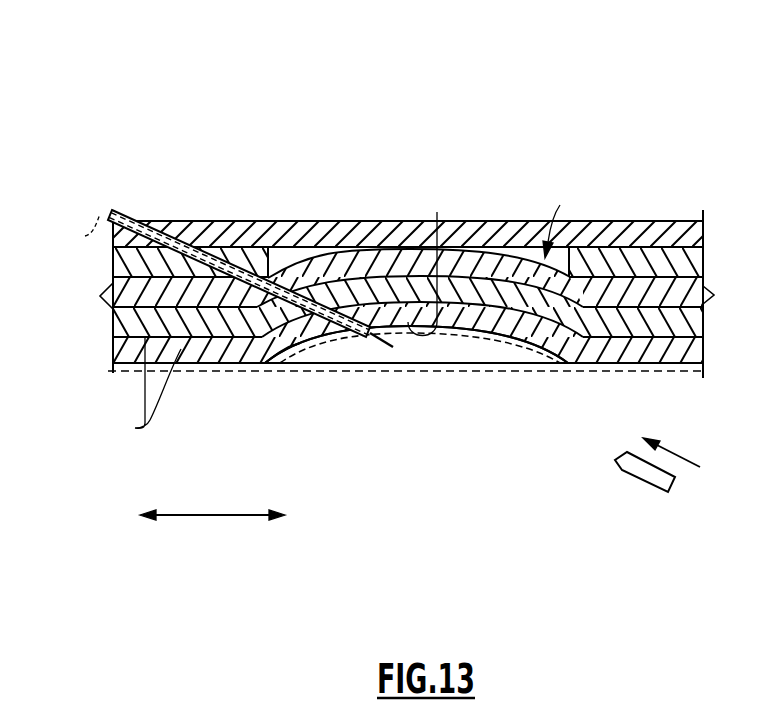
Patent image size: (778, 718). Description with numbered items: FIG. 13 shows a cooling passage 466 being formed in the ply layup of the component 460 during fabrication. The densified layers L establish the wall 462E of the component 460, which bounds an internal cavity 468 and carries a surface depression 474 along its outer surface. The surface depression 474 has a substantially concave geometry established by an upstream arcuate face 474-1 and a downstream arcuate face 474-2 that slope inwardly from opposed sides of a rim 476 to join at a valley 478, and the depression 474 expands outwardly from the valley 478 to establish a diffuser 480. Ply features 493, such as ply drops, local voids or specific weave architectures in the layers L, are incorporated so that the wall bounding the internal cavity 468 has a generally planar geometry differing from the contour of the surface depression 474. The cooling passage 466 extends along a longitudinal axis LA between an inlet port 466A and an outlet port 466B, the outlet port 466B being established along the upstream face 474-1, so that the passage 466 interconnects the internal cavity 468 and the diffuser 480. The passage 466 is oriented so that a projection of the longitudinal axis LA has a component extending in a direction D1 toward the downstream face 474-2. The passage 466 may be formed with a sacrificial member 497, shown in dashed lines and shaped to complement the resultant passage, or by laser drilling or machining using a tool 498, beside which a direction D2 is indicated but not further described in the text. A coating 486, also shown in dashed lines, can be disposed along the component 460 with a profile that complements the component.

The component 460 is at (367, 304).
The wall 462E is at (112, 315).
The cooling passage 466 is at (286, 277).
The inlet port 466A is at (150, 220).
The outlet port 466B is at (397, 333).
The internal cavity 468 is at (370, 198).
The surface depression 474 is at (420, 402).
The upstream arcuate face 474-1 is at (303, 347).
The downstream arcuate face 474-2 is at (538, 350).
The rim 476 is at (270, 364).
The valley 478 is at (437, 225).
The diffuser 480 is at (480, 490).
The coating 486 is at (127, 366).
The ply feature 493 is at (577, 218).
The sacrificial member 497 is at (69, 230).
The tool 498 is at (675, 480).
The layers L is at (149, 389).
The longitudinal axis LA is at (368, 333).
The direction D1 is at (221, 518).
The second direction D2 is at (685, 456).